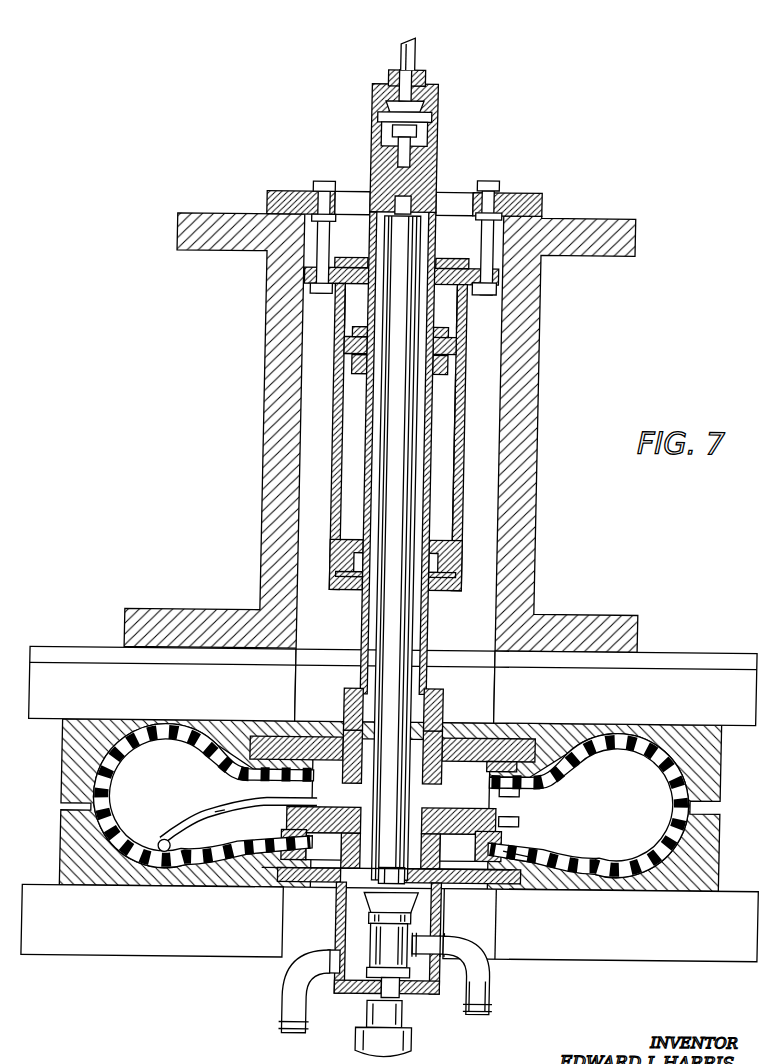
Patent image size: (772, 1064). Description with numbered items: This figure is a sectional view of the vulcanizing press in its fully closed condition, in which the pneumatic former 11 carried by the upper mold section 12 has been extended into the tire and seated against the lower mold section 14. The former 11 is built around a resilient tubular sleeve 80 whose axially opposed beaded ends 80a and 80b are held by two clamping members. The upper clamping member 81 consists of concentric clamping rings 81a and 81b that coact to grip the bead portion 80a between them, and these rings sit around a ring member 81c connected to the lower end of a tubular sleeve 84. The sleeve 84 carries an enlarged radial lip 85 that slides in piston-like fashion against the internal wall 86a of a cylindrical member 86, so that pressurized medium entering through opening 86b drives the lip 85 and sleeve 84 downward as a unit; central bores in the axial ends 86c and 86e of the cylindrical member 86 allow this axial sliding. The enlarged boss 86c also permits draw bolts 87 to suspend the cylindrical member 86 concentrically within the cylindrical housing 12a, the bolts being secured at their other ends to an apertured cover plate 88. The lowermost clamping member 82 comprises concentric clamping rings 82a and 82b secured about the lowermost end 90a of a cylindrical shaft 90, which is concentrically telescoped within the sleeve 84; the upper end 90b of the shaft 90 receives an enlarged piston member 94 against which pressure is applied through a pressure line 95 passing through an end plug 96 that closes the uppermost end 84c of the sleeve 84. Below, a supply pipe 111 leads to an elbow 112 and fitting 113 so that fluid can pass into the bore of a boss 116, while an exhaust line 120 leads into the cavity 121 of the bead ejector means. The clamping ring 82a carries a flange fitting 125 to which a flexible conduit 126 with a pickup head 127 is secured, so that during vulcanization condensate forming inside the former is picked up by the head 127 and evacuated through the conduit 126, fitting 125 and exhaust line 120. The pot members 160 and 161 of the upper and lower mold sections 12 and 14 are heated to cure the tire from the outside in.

The pneumatic former 11 is at (205, 796).
The upper mold section 12 is at (681, 644).
The cylindrical housing 12a is at (549, 416).
The lower mold section 14 is at (91, 957).
The resilient tubular sleeve 80 is at (611, 752).
The beaded end 80a is at (510, 790).
The beaded end 80b is at (508, 822).
The clamping member 81 is at (485, 707).
The clamping ring 81a is at (505, 745).
The clamping ring 81b is at (495, 740).
The ring member 81c is at (430, 705).
The clamping member 82 is at (480, 843).
The clamping ring 82a is at (445, 808).
The clamping ring 82b is at (532, 840).
The tubular sleeve 84 is at (441, 638).
The uppermost end 84c is at (374, 104).
The enlarged radial lip 85 is at (465, 347).
The cylindrical member 86 is at (470, 406).
The internal wall 86a is at (456, 454).
The opening 86b is at (350, 305).
The enlarged boss 86c is at (312, 270).
The axial end 86e is at (343, 562).
The draw bolts 87 is at (326, 180).
The apertured cover plate 88 is at (512, 188).
The cylindrical shaft 90 is at (397, 634).
The lowermost end 90a is at (378, 864).
The upper end 90b is at (434, 206).
The enlarged piston member 94 is at (421, 159).
The pressure line 95 is at (414, 58).
The end plug 96 is at (427, 81).
The supply pipe 111 is at (490, 990).
The elbow 112 is at (488, 950).
The fitting 113 is at (433, 915).
The boss 116 is at (372, 937).
The exhaust line 120 is at (283, 1020).
The cavity 121 is at (427, 970).
The flange fitting 125 is at (239, 813).
The flexible conduit 126 is at (192, 799).
The pickup head 127 is at (150, 832).
The pot member 160 is at (95, 644).
The pot member 161 is at (131, 954).